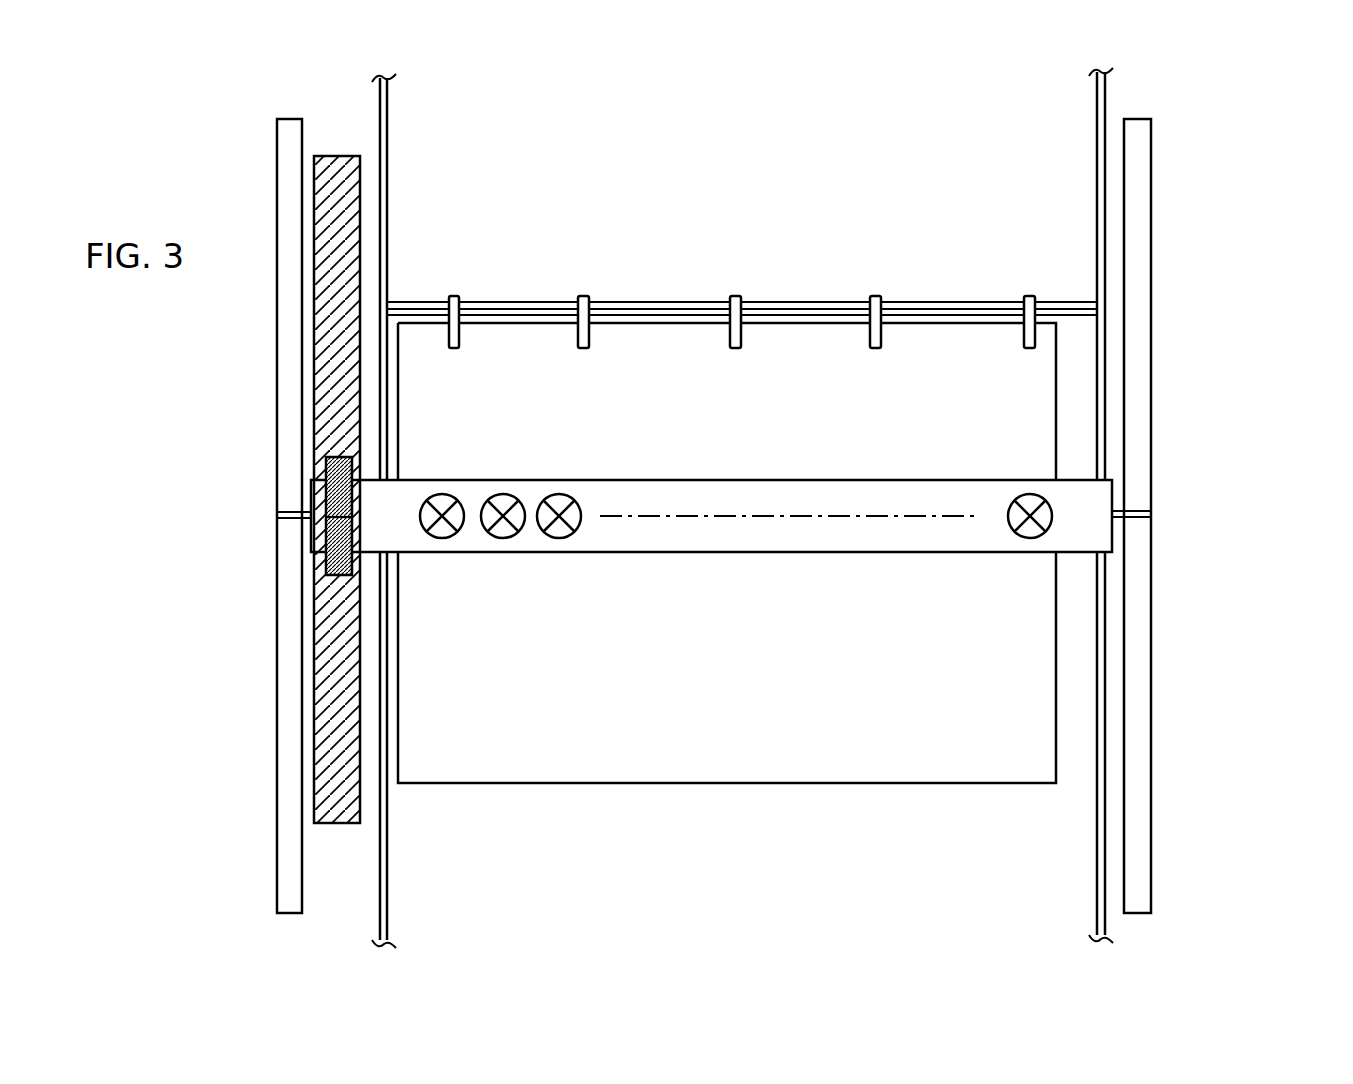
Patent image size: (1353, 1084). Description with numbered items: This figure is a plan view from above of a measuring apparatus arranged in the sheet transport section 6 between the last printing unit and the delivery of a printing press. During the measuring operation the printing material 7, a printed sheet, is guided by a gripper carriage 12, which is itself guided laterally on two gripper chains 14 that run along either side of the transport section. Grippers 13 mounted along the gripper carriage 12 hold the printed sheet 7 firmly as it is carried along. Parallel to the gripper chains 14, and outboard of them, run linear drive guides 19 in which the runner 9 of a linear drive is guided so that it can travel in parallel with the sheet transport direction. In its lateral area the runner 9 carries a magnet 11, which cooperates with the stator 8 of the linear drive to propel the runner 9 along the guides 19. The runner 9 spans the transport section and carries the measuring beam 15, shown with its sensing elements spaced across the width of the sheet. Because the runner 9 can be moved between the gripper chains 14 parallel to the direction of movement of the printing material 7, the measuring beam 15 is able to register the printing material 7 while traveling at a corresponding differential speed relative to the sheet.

The sheet transport section 6 is at (1226, 630).
The printing material 7 is at (1027, 727).
The stator 8 is at (337, 164).
The runner 9 is at (1093, 494).
The magnet 11 is at (336, 473).
The gripper carriage 12 is at (418, 304).
The grippers 13 is at (585, 295).
The gripper chains 14 is at (385, 136).
The measuring beam 15 is at (558, 493).
The linear drive guides 19 is at (287, 650).